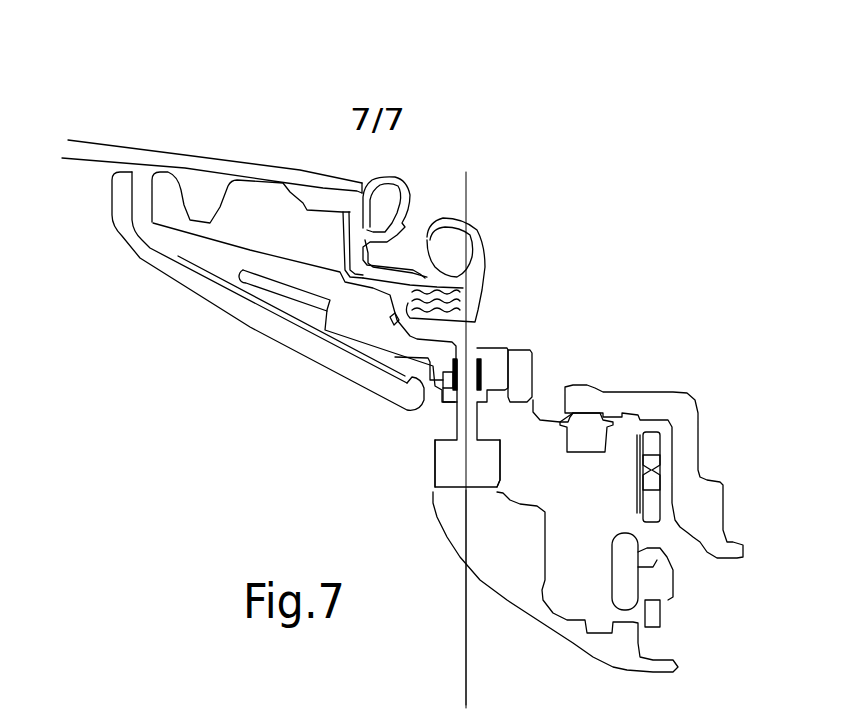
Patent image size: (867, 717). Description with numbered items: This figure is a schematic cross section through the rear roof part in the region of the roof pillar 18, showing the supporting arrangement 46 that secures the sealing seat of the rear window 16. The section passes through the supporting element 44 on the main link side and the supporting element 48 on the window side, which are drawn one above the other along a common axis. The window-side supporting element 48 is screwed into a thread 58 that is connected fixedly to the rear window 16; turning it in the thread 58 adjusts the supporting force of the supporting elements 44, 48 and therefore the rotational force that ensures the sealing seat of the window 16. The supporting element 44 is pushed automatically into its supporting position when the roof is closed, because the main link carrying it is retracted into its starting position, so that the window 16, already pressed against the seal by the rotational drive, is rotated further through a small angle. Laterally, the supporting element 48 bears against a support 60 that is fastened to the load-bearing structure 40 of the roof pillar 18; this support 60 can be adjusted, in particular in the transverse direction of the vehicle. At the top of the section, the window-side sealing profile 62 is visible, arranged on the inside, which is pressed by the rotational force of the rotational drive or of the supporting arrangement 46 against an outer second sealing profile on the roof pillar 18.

The rear window 16 is at (181, 115).
The roof pillar 18 is at (700, 317).
The load-bearing structure 40 is at (654, 455).
The supporting element 44 is at (507, 577).
The supporting arrangement 46 is at (372, 531).
The supporting element 48 is at (385, 471).
The thread 58 is at (487, 370).
The support 60 is at (531, 372).
The sealing profile 62 is at (436, 190).